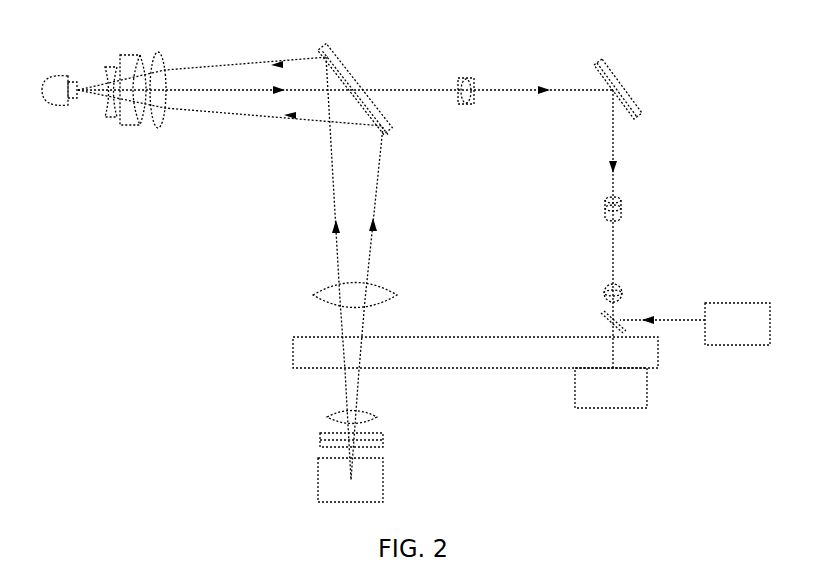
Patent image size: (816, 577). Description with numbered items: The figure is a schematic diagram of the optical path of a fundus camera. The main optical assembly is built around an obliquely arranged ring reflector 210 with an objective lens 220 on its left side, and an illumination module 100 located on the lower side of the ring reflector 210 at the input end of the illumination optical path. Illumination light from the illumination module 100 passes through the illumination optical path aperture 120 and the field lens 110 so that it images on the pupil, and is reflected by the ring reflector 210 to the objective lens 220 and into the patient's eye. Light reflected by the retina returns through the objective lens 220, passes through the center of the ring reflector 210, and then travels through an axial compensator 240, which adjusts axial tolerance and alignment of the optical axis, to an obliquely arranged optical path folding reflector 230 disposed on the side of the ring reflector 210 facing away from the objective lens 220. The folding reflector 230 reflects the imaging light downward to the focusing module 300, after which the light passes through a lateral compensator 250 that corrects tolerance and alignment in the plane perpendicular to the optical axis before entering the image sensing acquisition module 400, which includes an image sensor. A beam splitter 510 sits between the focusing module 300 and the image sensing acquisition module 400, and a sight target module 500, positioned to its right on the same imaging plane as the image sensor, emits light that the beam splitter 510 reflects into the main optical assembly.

The illumination module 100 is at (325, 488).
The field lens 110 is at (323, 298).
The illumination optical path aperture 120 is at (373, 442).
The ring reflector 210 is at (333, 58).
The objective lens 220 is at (163, 60).
The optical path folding reflector 230 is at (612, 68).
The axial compensator 240 is at (475, 82).
The lateral compensator 250 is at (623, 297).
The focusing module 300 is at (622, 208).
The image sensing acquisition module 400 is at (645, 402).
The sight target module 500 is at (735, 313).
The beam splitter 510 is at (607, 322).